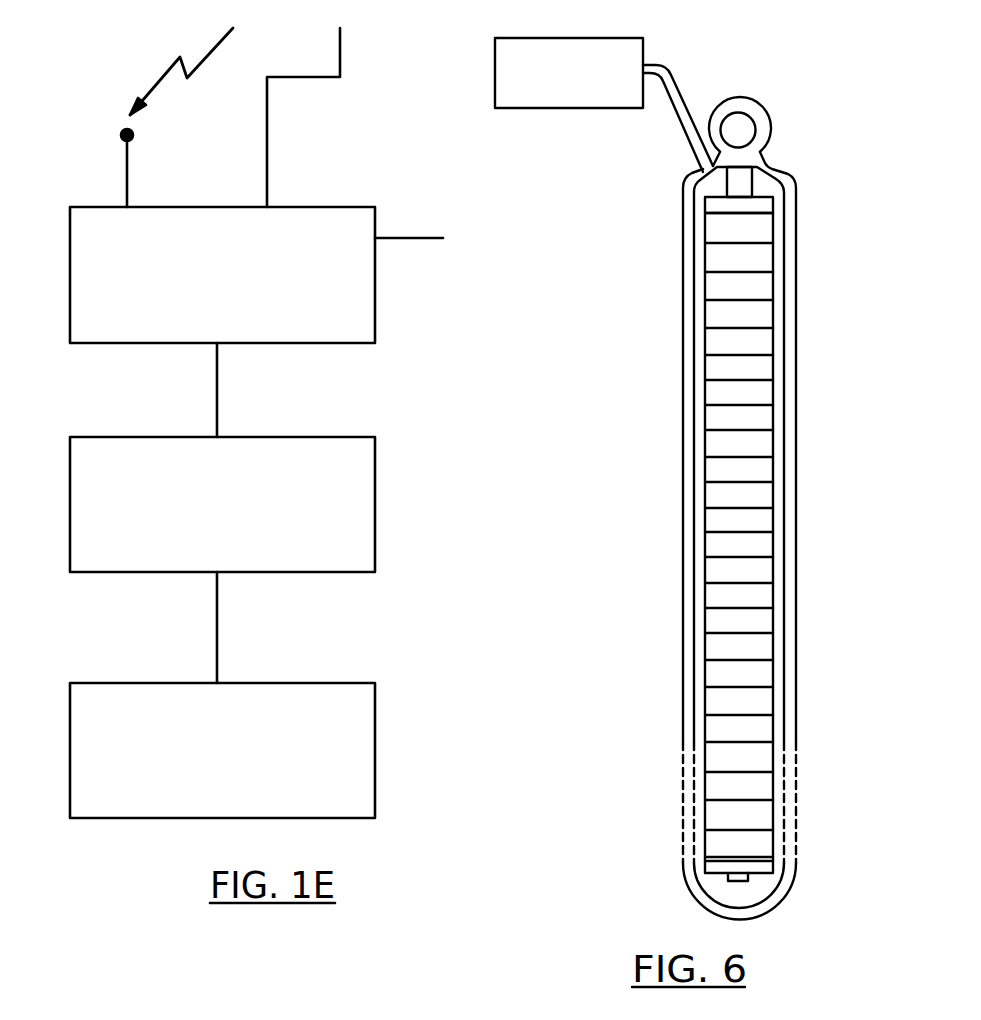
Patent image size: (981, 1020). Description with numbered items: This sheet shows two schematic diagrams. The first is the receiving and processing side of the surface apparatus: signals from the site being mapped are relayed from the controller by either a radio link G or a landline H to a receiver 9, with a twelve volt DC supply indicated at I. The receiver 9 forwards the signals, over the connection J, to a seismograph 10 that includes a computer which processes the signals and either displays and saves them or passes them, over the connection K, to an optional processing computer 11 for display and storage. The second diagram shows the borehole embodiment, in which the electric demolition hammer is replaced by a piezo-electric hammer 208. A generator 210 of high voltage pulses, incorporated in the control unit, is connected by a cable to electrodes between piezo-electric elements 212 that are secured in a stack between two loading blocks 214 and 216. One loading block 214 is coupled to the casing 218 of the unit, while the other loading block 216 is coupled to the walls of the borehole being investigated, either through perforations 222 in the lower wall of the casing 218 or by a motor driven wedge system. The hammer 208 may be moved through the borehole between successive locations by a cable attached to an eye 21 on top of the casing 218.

In FIG. 1E, the receiver 9 is at (222, 275).
In FIG. 1E, the seismograph 10 is at (222, 504).
In FIG. 1E, the processing computer 11 is at (222, 750).
In FIG. 1E, the radio link G is at (177, 116).
In FIG. 1E, the landline H is at (318, 115).
In FIG. 1E, the 12 V DC power input I is at (457, 229).
In FIG. 1E, the connection between blocks 9 and 10 J is at (228, 390).
In FIG. 1E, the connection between blocks 10 and 11 K is at (230, 627).
In FIG. 6, the eye 21 is at (732, 104).
In FIG. 6, the piezo-electric hammer 208 is at (660, 499).
In FIG. 6, the generator 210 is at (607, 110).
In FIG. 6, the piezo-electric elements 212 is at (763, 368).
In FIG. 6, the loading block 214 is at (708, 205).
In FIG. 6, the loading block 216 is at (712, 868).
In FIG. 6, the casing 218 is at (682, 588).
In FIG. 6, the perforations 222 is at (670, 781).